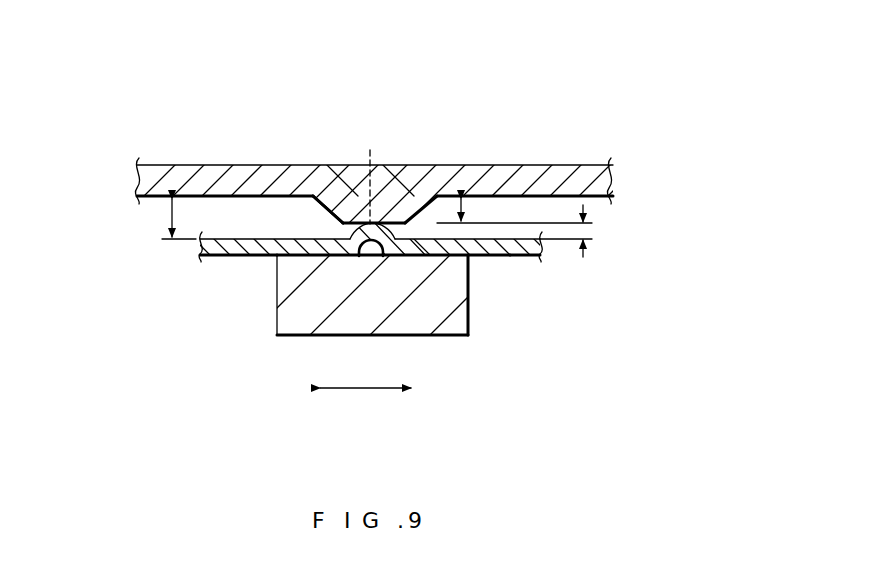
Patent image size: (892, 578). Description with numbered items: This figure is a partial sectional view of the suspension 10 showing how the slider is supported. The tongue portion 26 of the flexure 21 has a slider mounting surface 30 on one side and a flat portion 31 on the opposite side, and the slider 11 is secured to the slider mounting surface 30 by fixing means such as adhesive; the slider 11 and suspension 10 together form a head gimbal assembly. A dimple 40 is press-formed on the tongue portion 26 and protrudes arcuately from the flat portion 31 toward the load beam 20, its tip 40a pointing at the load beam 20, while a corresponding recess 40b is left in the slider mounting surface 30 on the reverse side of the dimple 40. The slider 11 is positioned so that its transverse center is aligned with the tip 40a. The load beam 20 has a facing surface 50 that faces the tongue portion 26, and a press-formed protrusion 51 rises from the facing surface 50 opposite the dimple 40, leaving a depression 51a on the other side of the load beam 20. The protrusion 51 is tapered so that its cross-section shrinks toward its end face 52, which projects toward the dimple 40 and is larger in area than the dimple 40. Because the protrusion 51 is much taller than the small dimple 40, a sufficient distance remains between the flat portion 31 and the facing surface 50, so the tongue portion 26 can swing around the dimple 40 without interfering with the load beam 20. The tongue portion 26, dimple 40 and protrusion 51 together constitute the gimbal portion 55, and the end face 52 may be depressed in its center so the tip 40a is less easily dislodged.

The suspension 10 is at (531, 106).
The load beam 20 is at (226, 165).
The facing surface 50 is at (137, 198).
The protrusion 51 is at (300, 182).
The depression 51a is at (345, 212).
The end face 52 is at (342, 223).
The dimple 40 is at (350, 238).
The tip of the dimple 40a is at (386, 222).
The recess 40b is at (375, 255).
The tongue portion 26 is at (245, 255).
The flat portion 31 is at (474, 255).
The flexure 21 is at (527, 257).
The slider mounting surface 30 is at (327, 255).
The slider 11 is at (438, 336).
The gimbal portion 55 is at (414, 242).